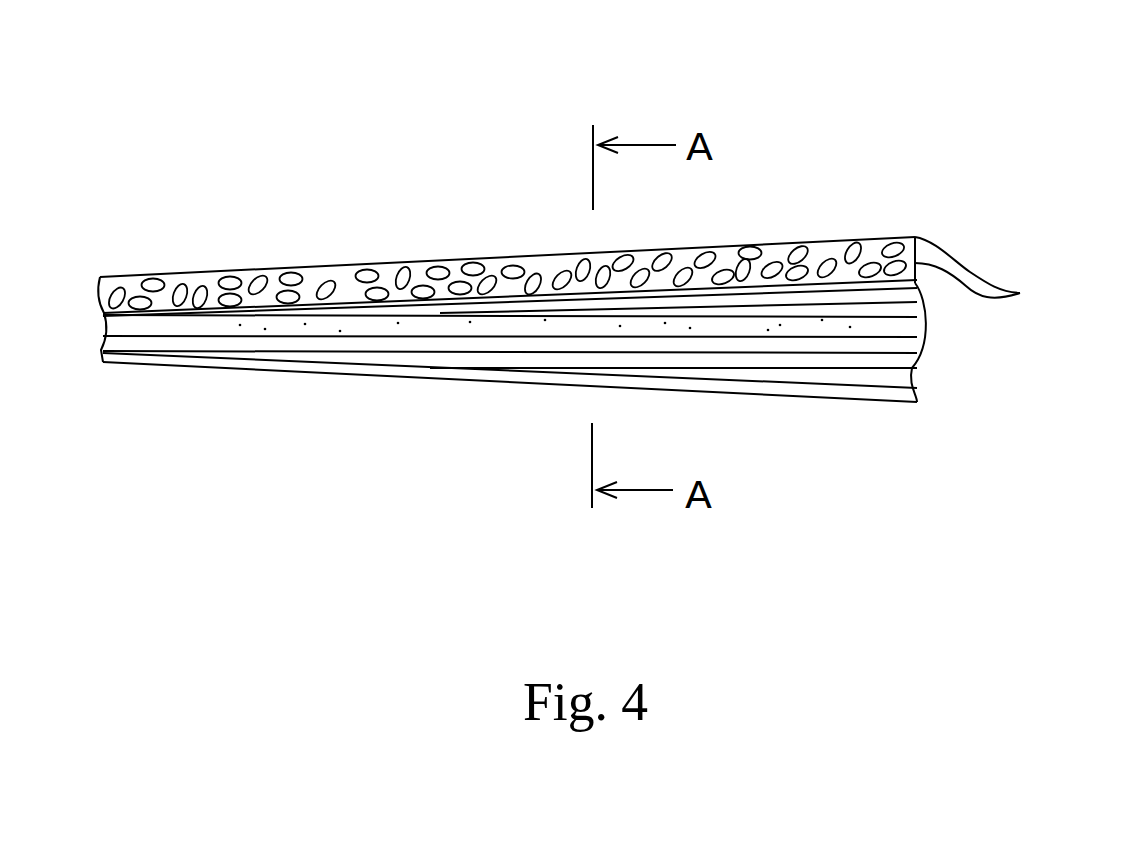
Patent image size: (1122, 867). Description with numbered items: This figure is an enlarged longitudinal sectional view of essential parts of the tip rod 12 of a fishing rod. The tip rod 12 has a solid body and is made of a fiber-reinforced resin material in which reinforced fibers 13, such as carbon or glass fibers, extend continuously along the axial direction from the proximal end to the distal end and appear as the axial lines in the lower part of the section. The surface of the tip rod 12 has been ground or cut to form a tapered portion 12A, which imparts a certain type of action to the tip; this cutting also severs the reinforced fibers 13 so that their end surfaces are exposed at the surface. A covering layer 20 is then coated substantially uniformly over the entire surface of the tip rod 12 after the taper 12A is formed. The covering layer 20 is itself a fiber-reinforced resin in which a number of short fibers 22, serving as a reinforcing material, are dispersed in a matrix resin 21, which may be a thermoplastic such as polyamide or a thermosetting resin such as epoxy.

The covering layer 20 is at (914, 206).
The matrix resin 21 is at (545, 262).
The short fibers 22 is at (1018, 293).
The tip rod 12 is at (944, 352).
The tapered portion 12A is at (345, 302).
The reinforced fibers 13 is at (440, 336).